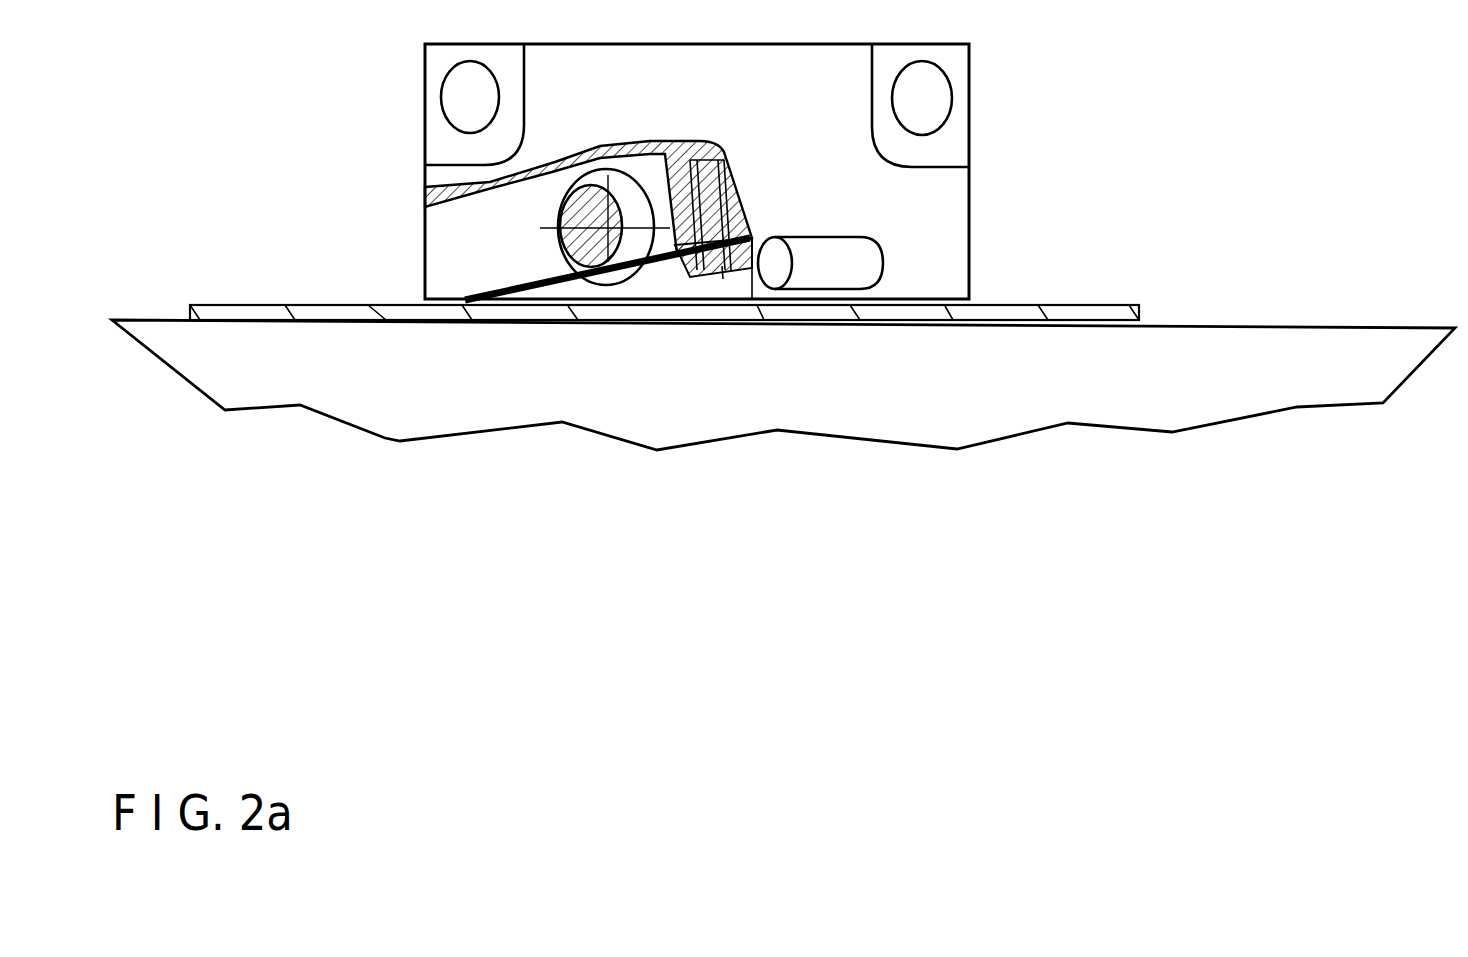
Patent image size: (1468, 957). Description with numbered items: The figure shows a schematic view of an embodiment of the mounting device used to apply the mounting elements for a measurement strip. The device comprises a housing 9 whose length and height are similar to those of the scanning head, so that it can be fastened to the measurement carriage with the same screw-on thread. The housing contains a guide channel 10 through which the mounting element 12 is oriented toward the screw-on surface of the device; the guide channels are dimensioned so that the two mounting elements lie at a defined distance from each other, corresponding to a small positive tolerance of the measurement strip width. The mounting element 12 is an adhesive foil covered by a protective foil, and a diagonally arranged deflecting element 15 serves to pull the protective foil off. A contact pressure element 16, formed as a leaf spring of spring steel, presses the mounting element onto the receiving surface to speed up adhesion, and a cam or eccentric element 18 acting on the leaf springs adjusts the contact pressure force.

The housing 9 is at (940, 193).
The guide channel 10 is at (970, 290).
The mounting element 12 is at (368, 305).
The deflecting element 15 is at (820, 270).
The contact pressure element 16 is at (550, 305).
The cam or eccentric element 18 is at (583, 235).